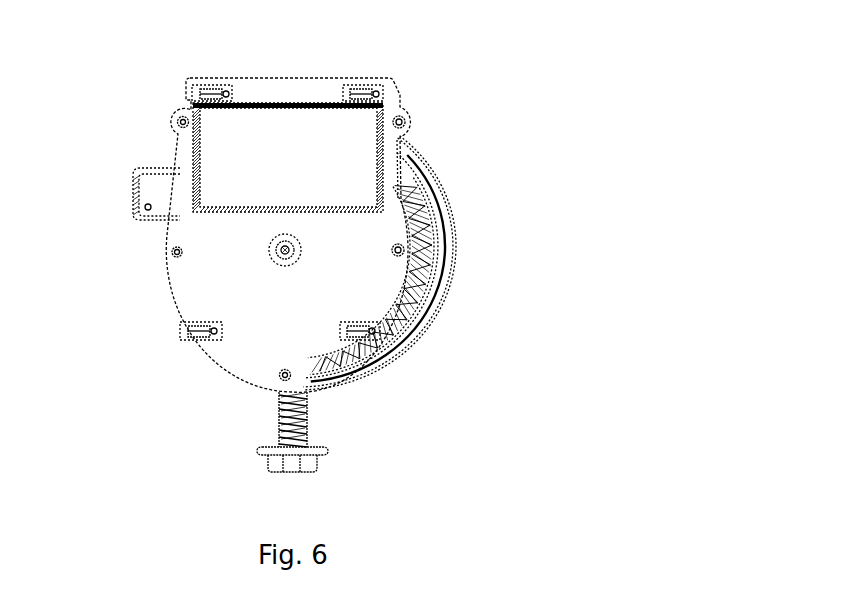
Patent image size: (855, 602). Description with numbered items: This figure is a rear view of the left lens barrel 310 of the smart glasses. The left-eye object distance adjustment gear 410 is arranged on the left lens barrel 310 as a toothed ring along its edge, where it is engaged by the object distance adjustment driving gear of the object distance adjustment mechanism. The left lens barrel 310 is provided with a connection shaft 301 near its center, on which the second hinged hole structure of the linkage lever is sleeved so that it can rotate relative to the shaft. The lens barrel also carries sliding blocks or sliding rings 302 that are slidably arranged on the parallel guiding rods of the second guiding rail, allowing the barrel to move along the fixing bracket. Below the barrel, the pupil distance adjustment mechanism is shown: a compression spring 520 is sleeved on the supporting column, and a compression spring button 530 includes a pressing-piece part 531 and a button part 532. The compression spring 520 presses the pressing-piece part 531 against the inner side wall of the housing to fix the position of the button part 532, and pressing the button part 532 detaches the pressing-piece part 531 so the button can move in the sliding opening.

The connection shaft 301 is at (279, 238).
The sliding blocks or sliding rings 302 is at (193, 84).
The left lens barrel 310 is at (193, 292).
The left-eye object distance adjustment gear 410 is at (440, 252).
The compression spring 520 is at (304, 426).
The compression spring button 530 is at (354, 477).
The pressing-piece part 531 is at (325, 451).
The button part 532 is at (303, 470).